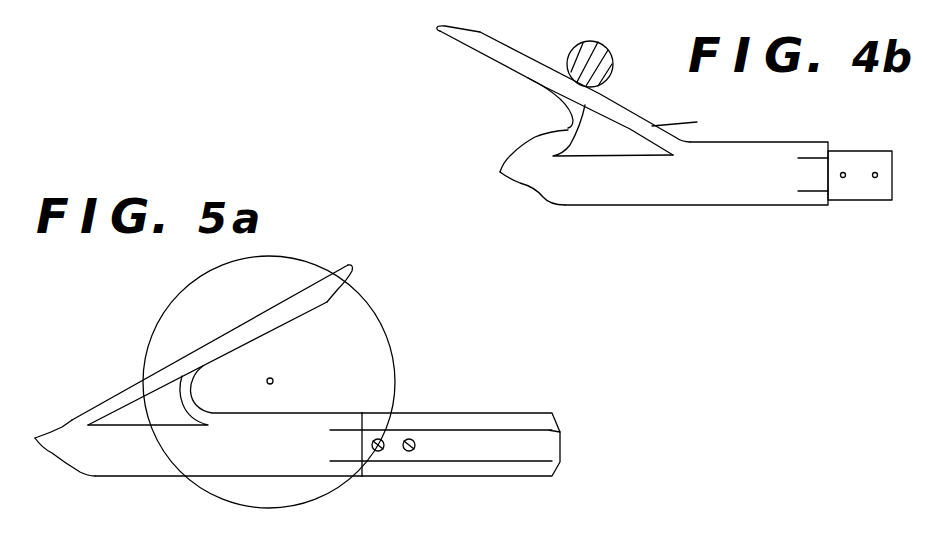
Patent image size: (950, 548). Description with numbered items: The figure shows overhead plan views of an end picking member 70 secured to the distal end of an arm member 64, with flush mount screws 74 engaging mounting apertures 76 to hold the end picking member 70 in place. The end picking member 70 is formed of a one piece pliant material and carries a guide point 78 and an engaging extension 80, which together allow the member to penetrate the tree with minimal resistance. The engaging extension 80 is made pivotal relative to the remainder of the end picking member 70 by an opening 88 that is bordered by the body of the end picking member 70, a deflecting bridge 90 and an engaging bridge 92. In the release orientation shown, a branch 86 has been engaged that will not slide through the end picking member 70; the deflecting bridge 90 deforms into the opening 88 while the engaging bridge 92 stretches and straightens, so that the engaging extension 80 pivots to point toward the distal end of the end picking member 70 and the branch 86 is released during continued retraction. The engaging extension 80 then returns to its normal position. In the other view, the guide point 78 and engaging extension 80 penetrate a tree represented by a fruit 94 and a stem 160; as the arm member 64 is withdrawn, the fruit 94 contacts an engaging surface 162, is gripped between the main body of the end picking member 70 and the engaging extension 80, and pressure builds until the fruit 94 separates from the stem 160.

In FIG. 5A, the arm member 64 is at (502, 423).
In FIG. 4B, the end picking member 70 is at (610, 206).
In FIG. 5A, the end picking member 70 is at (160, 476).
In FIG. 5A, the flush mount screws 74 is at (410, 453).
In FIG. 4B, the mounting apertures 76 is at (843, 178).
In FIG. 4B, the guide point 78 is at (500, 172).
In FIG. 5A, the guide point 78 is at (35, 438).
In FIG. 4B, the engaging extension 80 is at (497, 61).
In FIG. 5A, the engaging extension 80 is at (245, 318).
In FIG. 4B, the branch 86 is at (607, 49).
In FIG. 4B, the opening 88 is at (620, 148).
In FIG. 5A, the opening 88 is at (148, 400).
In FIG. 4B, the deflecting bridge 90 is at (573, 128).
In FIG. 4B, the engaging bridge 92 is at (620, 108).
In FIG. 5A, the fruit 94 is at (372, 301).
In FIG. 5A, the stem 160 is at (273, 380).
In FIG. 4B, the engaging surface 162 is at (529, 52).
In FIG. 5A, the engaging surface 162 is at (297, 318).